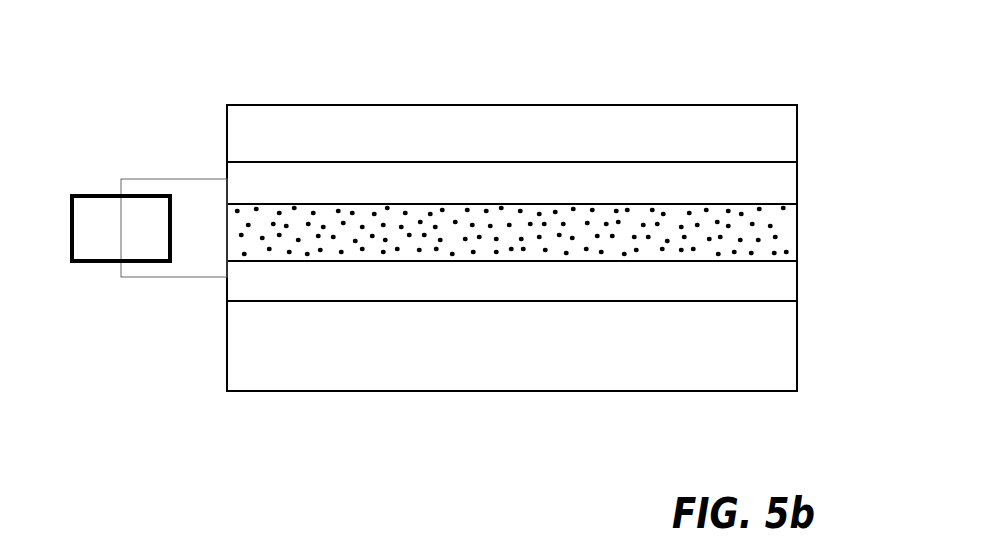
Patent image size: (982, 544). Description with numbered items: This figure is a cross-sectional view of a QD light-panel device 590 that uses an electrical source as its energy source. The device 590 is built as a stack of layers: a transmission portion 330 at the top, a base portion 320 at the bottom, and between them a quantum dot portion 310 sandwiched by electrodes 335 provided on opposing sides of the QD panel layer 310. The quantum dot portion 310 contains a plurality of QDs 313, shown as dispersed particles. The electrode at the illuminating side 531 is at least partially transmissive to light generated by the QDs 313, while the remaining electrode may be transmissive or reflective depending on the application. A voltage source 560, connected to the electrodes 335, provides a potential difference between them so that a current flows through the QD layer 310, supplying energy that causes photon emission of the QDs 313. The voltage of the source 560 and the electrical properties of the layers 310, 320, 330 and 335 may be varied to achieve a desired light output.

The device 590 is at (213, 78).
The illuminating side 531 is at (672, 106).
The transmission portion 330 is at (797, 137).
The electrodes 335 is at (797, 186).
The quantum dot portion 310 is at (797, 233).
The quantum dots 313 is at (568, 213).
The base portion 320 is at (797, 350).
The voltage source 560 is at (88, 235).